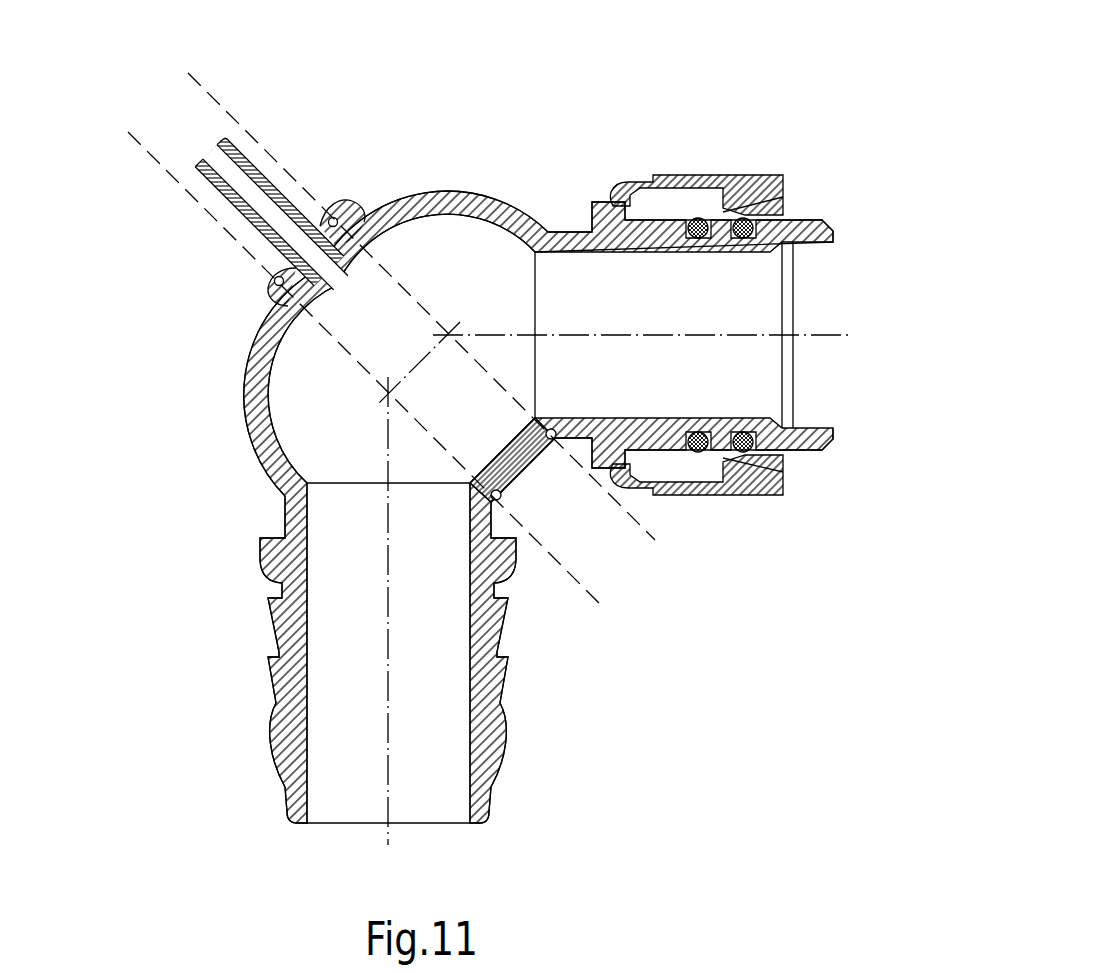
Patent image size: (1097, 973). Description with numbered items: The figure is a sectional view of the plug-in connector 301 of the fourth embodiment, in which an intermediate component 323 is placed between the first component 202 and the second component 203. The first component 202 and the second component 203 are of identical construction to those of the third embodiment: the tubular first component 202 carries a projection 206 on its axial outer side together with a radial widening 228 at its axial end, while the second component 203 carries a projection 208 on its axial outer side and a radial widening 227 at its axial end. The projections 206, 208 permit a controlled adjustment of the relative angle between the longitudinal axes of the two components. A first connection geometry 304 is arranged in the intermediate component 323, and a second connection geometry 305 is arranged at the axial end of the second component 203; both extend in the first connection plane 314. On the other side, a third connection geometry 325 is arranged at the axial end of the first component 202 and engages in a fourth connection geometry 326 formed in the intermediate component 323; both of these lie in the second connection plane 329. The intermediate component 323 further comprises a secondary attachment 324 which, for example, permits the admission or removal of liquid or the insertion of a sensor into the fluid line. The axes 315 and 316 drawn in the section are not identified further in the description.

The first component 202 is at (295, 517).
The second component 203 is at (568, 233).
The projection 206 is at (257, 315).
The projection 208 is at (383, 207).
The radial widening 227 is at (467, 213).
The radial widening 228 is at (253, 407).
The plug-in connector 301 is at (452, 178).
The first connection geometry 304 is at (330, 219).
The second connection geometry 305 is at (347, 210).
The first connection plane 314 is at (657, 543).
The axis 315 is at (393, 790).
The axis 316 is at (762, 337).
The intermediate component 323 is at (520, 458).
The secondary attachment 324 is at (240, 140).
The third connection geometry 325 is at (263, 295).
The fourth connection geometry 326 is at (275, 273).
The second connection plane 329 is at (590, 600).